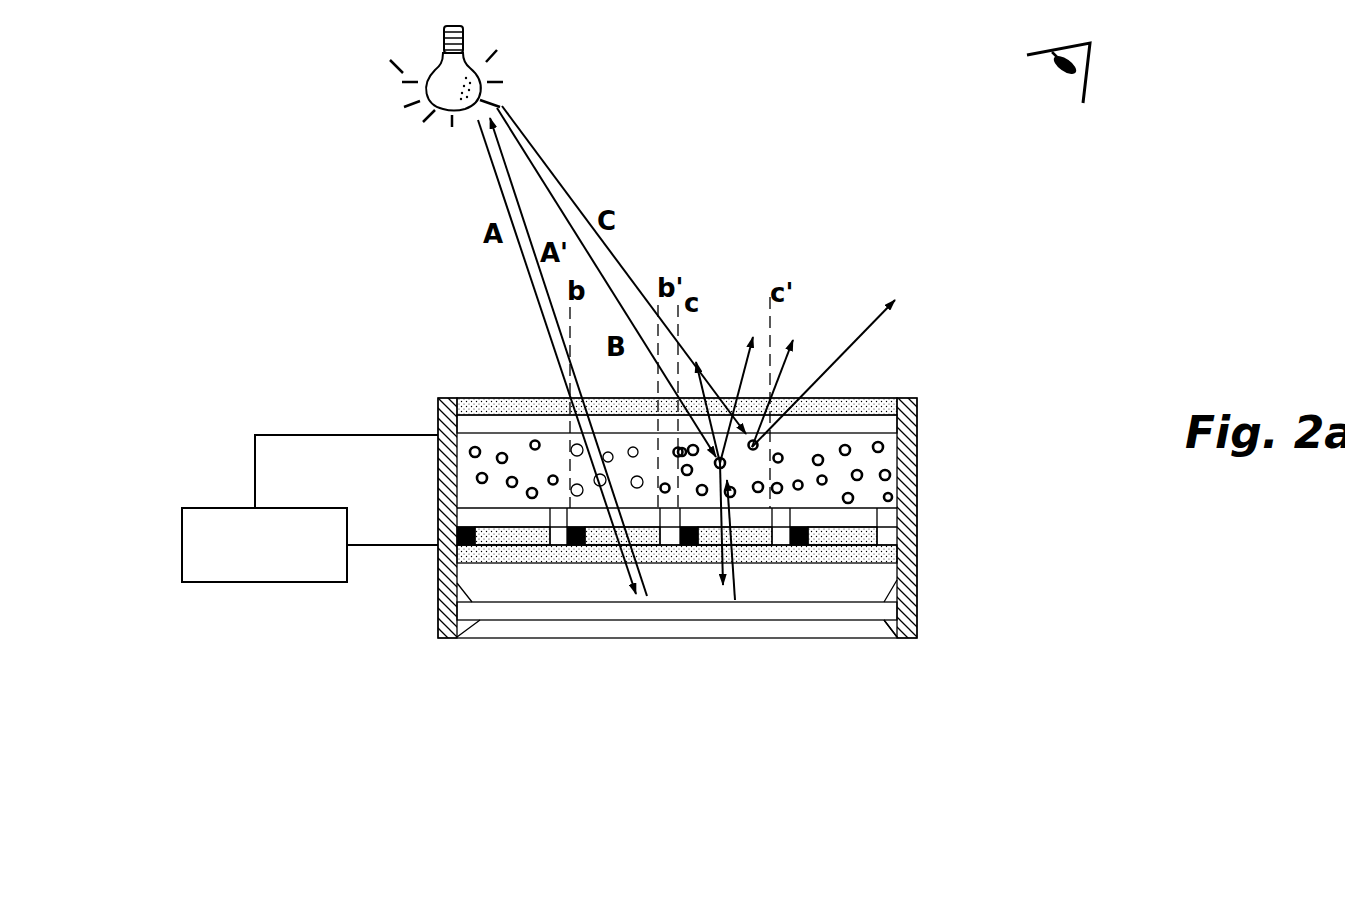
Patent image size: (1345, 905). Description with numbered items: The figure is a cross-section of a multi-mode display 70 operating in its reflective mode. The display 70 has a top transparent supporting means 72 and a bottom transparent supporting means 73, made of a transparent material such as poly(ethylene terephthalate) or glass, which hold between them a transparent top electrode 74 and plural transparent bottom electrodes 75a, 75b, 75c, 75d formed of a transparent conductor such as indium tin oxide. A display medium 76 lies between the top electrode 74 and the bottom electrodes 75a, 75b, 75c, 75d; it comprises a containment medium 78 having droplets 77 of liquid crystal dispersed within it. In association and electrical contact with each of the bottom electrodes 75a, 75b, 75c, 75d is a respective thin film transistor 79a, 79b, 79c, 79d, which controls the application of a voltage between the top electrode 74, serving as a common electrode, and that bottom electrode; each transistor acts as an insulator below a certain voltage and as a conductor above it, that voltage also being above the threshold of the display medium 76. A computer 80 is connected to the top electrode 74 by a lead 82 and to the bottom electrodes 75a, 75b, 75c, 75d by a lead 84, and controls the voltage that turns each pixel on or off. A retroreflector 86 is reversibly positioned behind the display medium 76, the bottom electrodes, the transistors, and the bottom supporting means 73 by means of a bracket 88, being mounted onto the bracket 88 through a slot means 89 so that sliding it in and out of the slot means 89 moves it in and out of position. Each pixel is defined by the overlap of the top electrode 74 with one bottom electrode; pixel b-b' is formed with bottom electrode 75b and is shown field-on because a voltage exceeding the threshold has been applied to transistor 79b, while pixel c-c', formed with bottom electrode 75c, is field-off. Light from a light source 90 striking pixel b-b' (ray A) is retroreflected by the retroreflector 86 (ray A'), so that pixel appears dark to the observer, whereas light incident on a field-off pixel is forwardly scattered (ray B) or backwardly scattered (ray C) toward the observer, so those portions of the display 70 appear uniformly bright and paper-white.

The display 70 is at (1030, 332).
The top transparent supporting means 72 is at (510, 405).
The bottom transparent supporting means 73 is at (887, 533).
The transparent top electrode 74 is at (887, 427).
The transparent bottom electrode 75a is at (511, 527).
The transparent bottom electrode 75b is at (603, 530).
The transparent bottom electrode 75c is at (710, 530).
The transparent bottom electrode 75d is at (845, 530).
The display medium 76 is at (917, 463).
The droplets of liquid crystal 77 is at (480, 478).
The containment medium 78 is at (885, 505).
The thin film transistor 79a is at (437, 557).
The thin film transistor 79b is at (574, 530).
The thin film transistor 79c is at (680, 535).
The thin film transistor 79d is at (788, 545).
The computer 80 is at (257, 582).
The lead 82 is at (280, 430).
The lead 84 is at (383, 548).
The retroreflector 86 is at (891, 622).
The bracket 88 is at (917, 555).
The slot means 89 is at (890, 628).
The light source 90 is at (375, 99).